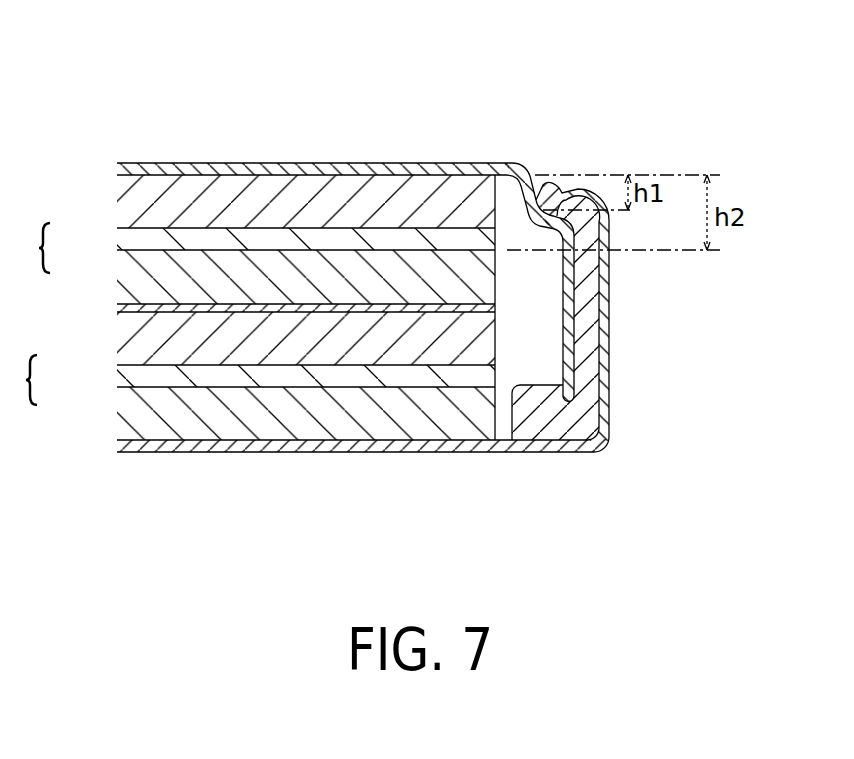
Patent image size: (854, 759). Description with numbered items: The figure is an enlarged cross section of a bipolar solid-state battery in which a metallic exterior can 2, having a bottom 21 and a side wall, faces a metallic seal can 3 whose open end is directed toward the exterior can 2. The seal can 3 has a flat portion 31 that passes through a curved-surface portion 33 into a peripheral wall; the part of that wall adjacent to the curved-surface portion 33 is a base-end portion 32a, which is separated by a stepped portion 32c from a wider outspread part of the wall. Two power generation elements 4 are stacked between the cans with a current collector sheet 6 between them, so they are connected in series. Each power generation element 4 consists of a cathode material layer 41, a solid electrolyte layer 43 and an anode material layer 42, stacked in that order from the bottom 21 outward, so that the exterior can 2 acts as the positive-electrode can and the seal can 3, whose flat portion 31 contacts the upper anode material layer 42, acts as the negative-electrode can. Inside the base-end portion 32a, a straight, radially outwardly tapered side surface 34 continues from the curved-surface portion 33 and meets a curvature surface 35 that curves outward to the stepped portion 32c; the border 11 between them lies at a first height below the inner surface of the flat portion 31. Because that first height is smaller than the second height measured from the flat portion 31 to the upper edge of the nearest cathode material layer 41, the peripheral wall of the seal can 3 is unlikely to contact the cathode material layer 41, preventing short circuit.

The exterior can 2 is at (392, 472).
The bottom 21 is at (300, 452).
The seal can 3 is at (292, 141).
The flat portion 31 is at (403, 163).
The base-end portion 32a is at (528, 190).
The stepped portion 32c is at (550, 225).
The curved-surface portion 33 is at (540, 188).
The side surface 34 is at (548, 200).
The curvature surface 35 is at (535, 197).
The border 11 is at (557, 184).
The power generation element 4 is at (249, 307).
The cathode material layer 41 is at (163, 273).
The anode material layer 42 is at (167, 216).
The solid electrolyte layer 43 is at (163, 243).
The current collector sheet 6 is at (140, 307).